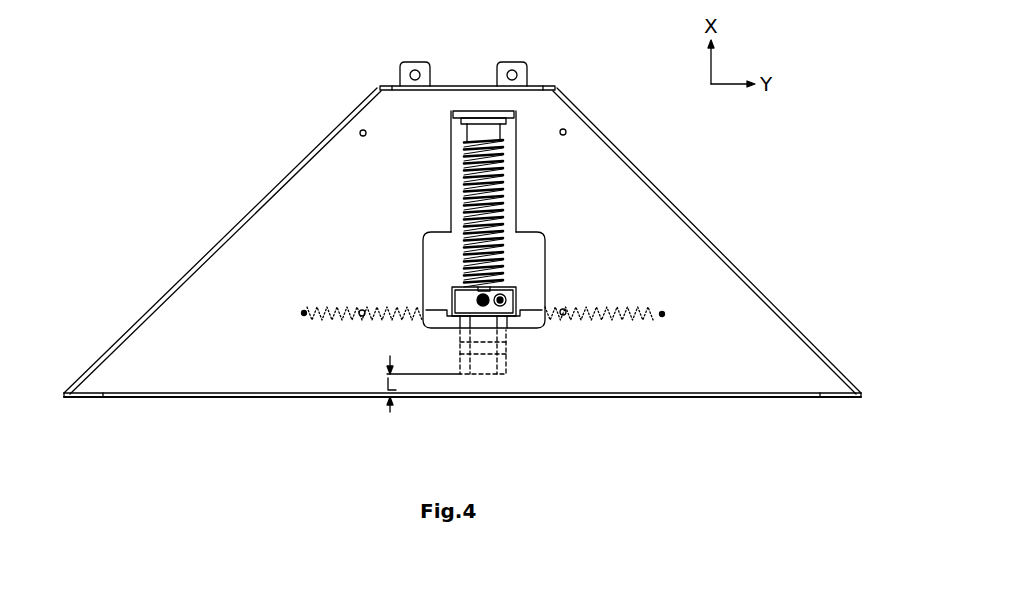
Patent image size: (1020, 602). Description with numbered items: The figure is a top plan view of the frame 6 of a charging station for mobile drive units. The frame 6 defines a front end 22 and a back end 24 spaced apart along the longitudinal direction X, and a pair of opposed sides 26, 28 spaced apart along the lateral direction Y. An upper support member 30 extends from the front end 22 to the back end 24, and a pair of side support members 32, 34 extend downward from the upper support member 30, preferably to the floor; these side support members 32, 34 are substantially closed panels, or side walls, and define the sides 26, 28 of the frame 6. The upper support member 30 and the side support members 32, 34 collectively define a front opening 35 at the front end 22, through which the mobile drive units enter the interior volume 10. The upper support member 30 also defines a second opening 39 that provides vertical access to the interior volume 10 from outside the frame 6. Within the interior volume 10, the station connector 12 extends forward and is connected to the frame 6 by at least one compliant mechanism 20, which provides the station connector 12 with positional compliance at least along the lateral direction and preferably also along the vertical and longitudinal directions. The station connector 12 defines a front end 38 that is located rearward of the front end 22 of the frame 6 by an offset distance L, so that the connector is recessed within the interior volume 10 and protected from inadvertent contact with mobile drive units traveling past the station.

The frame 6 is at (510, 33).
The interior volume 10 is at (597, 373).
The station connector 12 is at (507, 368).
The compliant mechanism 20 is at (350, 306).
The front end 22 is at (328, 400).
The back end 24 is at (463, 86).
The side 26 is at (222, 241).
The side 28 is at (707, 241).
The upper support member 30 is at (462, 272).
The side support member 32 is at (233, 223).
The side support member 34 is at (718, 256).
The front opening 35 is at (285, 397).
The front end 38 is at (484, 374).
The second opening 39 is at (516, 128).